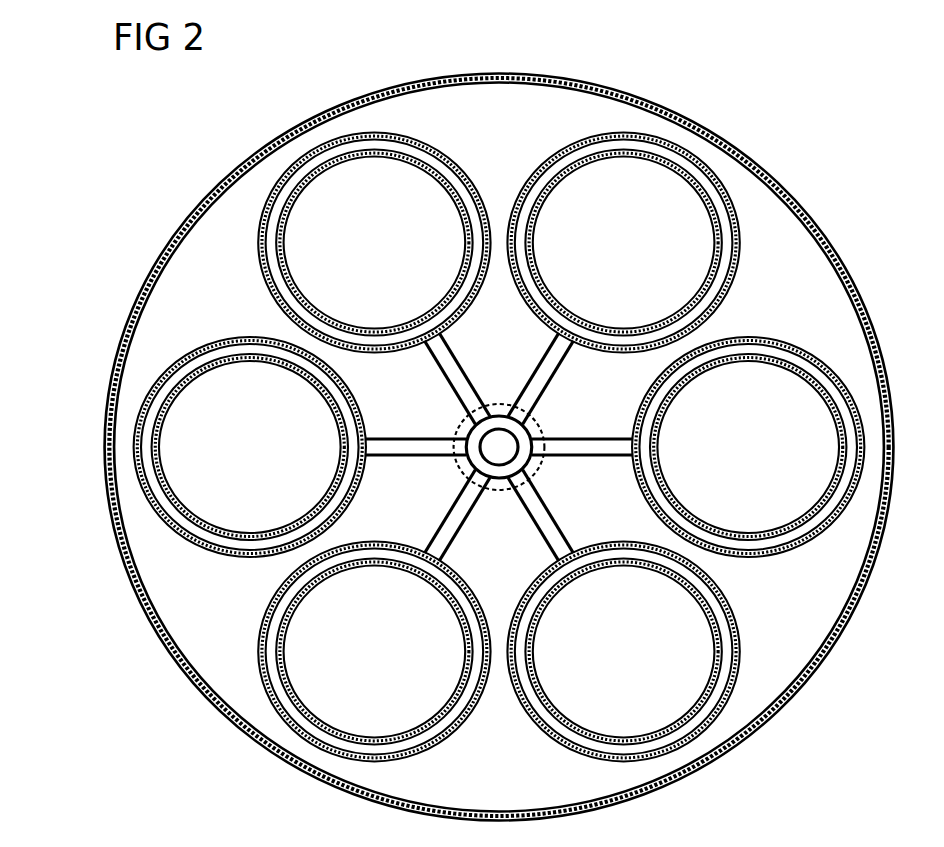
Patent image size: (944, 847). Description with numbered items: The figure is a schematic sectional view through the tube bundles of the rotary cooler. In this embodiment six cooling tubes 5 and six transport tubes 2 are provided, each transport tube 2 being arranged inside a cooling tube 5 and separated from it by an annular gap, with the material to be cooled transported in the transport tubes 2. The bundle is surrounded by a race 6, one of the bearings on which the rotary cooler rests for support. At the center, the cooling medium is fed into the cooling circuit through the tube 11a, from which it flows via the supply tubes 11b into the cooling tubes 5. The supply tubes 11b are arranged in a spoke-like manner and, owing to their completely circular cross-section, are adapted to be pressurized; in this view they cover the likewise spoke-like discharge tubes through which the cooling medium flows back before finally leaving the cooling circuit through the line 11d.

The transport tube 2 is at (293, 262).
The cooling tube 5 is at (263, 265).
The race 6 is at (843, 252).
The tube 11a is at (520, 458).
The supply tube 11b is at (445, 378).
The line 11d is at (497, 438).